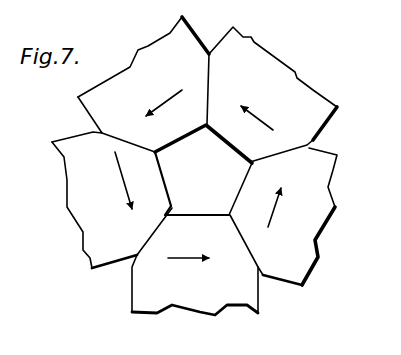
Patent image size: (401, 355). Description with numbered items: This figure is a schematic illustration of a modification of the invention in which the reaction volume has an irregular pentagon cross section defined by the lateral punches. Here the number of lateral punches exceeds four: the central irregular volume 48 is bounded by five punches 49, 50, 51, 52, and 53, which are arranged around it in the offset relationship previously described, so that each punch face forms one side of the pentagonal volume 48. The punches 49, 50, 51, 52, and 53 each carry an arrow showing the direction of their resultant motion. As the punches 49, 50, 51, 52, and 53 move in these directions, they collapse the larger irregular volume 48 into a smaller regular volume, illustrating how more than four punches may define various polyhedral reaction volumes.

The irregular volume 48 is at (218, 185).
The punch 49 is at (71, 193).
The punch 50 is at (152, 41).
The punch 51 is at (283, 66).
The punch 52 is at (326, 193).
The punch 53 is at (255, 309).